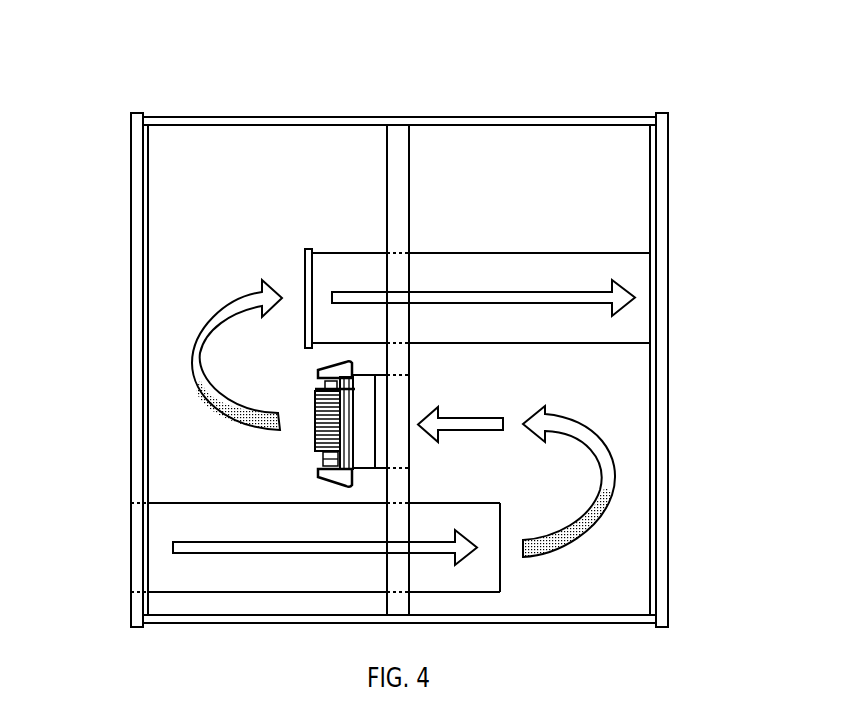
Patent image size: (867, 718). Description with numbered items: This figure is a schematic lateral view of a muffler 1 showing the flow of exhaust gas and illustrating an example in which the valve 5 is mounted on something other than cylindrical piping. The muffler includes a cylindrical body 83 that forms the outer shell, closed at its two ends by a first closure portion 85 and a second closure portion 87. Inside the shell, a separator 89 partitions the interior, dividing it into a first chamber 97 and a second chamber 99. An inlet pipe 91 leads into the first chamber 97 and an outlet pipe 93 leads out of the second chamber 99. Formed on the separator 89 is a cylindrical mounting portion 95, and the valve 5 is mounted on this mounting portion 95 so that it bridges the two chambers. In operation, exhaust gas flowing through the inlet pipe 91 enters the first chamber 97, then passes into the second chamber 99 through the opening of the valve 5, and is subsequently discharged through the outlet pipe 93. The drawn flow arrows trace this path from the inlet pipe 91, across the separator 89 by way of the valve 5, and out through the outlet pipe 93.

The actuator device 1 is at (305, 465).
The valve 5 is at (313, 445).
The cylindrical body 83 is at (247, 118).
The first closure portion 85 is at (137, 270).
The second closure portion 87 is at (662, 413).
The separator 89 is at (400, 154).
The inlet pipe 91 is at (275, 572).
The outlet pipe 93 is at (567, 268).
The mounting portion 95 is at (377, 452).
The first chamber 97 is at (555, 183).
The second chamber 99 is at (325, 182).